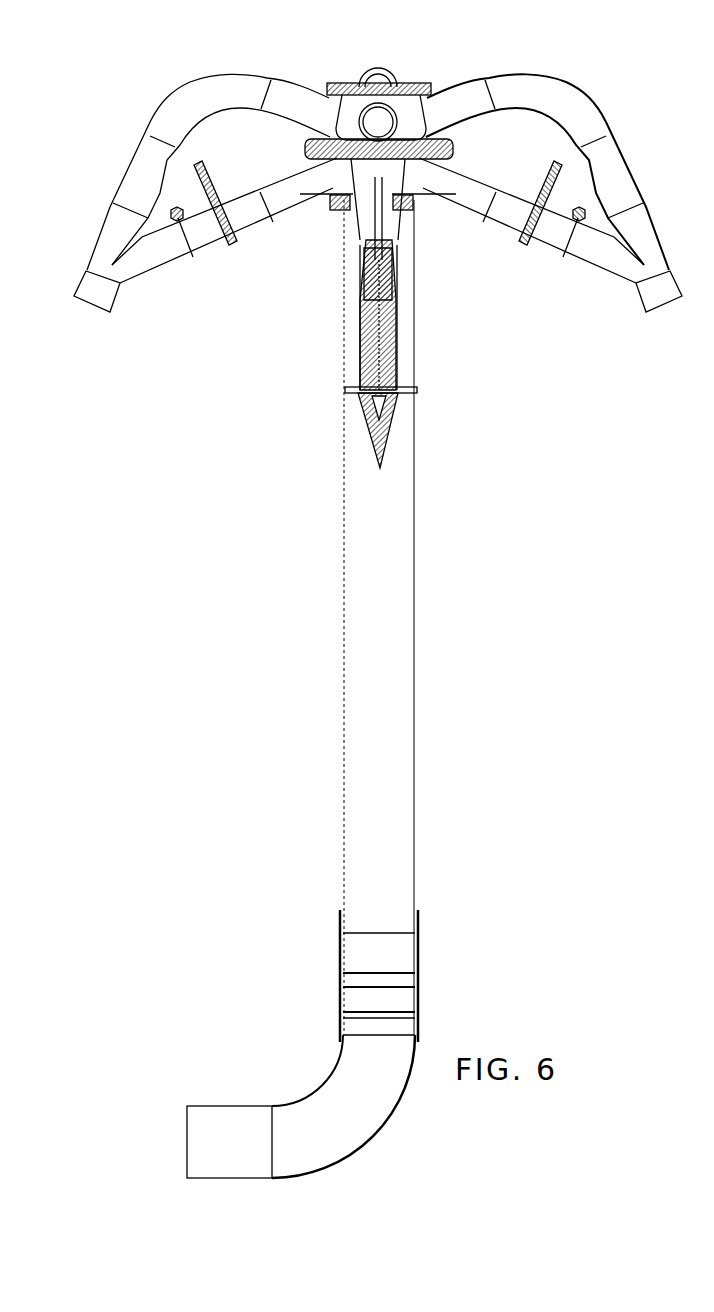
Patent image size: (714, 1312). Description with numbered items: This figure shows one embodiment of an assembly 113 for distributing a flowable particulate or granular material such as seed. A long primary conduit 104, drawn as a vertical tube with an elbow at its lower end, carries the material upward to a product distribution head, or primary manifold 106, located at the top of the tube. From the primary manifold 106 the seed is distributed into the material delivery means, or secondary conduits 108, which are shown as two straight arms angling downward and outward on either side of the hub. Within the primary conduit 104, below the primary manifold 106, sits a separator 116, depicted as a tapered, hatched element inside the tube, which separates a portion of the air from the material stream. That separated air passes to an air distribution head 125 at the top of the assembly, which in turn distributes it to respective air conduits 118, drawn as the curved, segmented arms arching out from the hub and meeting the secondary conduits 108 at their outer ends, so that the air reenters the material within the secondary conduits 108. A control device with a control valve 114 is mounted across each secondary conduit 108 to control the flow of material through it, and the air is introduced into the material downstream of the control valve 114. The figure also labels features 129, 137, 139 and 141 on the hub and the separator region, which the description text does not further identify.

The primary conduit 104 is at (415, 527).
The primary manifold 106 is at (347, 181).
The secondary conduits 108 is at (214, 248).
The assembly 113 is at (188, 54).
The control valve 114 is at (205, 167).
The separator 116 is at (393, 320).
The air conduits 118 is at (558, 73).
The air distribution head 125 is at (404, 95).
The right strut mount 129 is at (417, 203).
The tip 137 is at (390, 413).
The collar 139 is at (397, 363).
The shaft body 141 is at (362, 327).